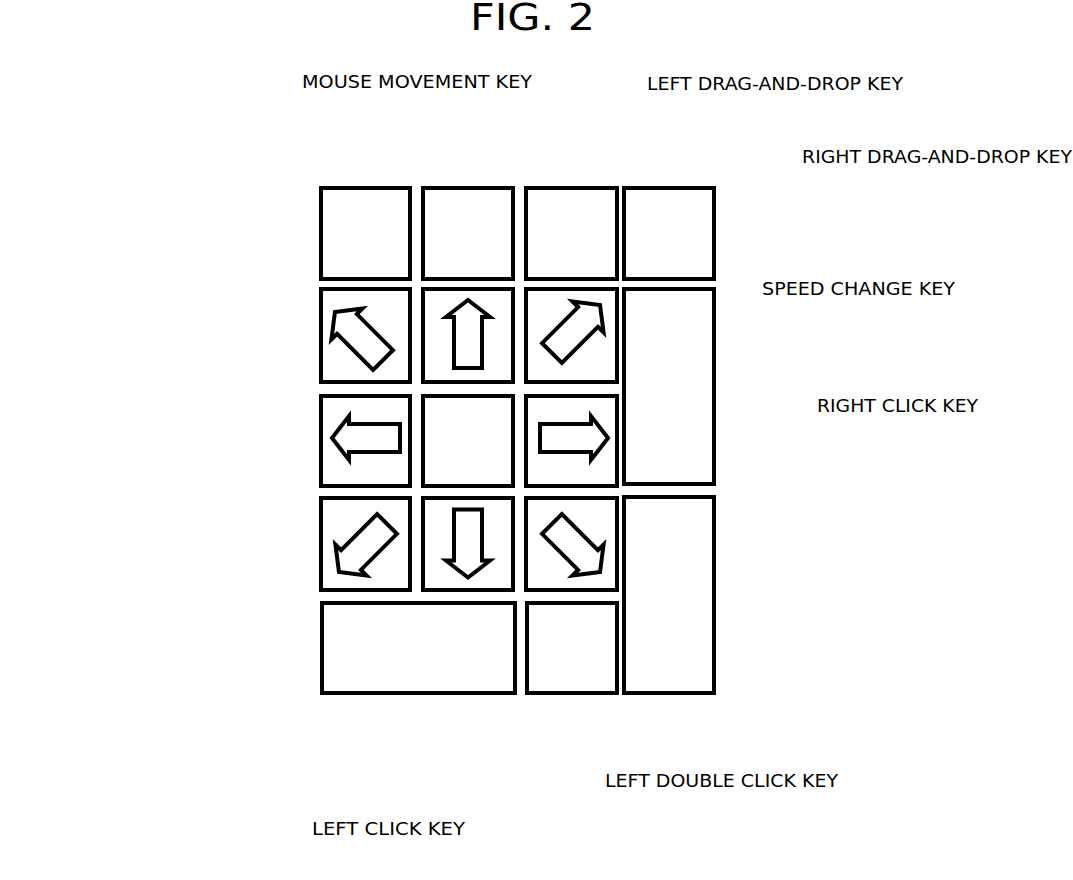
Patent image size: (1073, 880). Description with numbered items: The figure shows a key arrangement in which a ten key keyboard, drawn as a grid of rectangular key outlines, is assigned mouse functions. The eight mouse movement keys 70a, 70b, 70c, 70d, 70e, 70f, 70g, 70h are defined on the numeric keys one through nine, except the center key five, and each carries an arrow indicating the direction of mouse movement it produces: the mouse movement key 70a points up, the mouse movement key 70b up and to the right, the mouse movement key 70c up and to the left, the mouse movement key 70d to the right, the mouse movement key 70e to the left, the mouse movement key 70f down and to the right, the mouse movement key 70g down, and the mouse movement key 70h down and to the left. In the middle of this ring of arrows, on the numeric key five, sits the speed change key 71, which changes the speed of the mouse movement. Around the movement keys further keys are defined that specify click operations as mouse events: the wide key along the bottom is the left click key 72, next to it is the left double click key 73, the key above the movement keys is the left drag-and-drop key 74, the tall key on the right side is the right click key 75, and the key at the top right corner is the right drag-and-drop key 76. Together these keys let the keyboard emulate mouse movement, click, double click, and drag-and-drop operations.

The mouse movement key 70a is at (492, 310).
The mouse movement key 70b is at (558, 303).
The mouse movement key 70c is at (333, 365).
The mouse movement key 70d is at (607, 428).
The mouse movement key 70e is at (333, 470).
The mouse movement key 70f is at (603, 518).
The mouse movement key 70g is at (440, 575).
The mouse movement key 70h is at (333, 577).
The speed change key 71 is at (472, 435).
The left click key 72 is at (397, 672).
The left double click key 73 is at (558, 652).
The left drag-and-drop key 74 is at (582, 210).
The right click key 75 is at (677, 427).
The right drag-and-drop key 76 is at (673, 225).